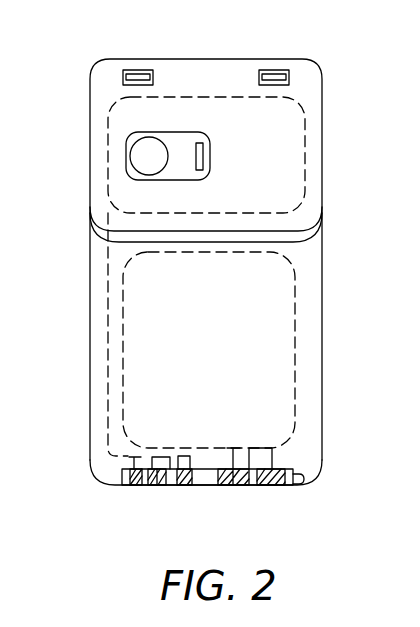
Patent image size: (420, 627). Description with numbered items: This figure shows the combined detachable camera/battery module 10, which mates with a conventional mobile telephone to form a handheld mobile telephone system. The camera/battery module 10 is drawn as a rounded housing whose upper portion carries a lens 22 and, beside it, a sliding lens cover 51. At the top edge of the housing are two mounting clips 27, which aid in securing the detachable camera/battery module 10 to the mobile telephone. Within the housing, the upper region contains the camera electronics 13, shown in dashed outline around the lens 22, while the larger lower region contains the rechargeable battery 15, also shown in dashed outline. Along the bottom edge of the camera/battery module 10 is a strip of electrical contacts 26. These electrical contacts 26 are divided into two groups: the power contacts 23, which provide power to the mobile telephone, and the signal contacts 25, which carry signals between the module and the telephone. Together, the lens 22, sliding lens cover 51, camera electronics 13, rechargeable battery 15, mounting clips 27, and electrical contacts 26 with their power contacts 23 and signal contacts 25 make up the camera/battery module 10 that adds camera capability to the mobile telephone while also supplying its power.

The camera/battery module 10 is at (90, 442).
The camera electronics 13 is at (292, 128).
The rechargeable battery 15 is at (273, 403).
The lens 22 is at (143, 155).
The power contacts 23 is at (285, 489).
The signal contacts 25 is at (195, 489).
The electrical contacts 26 is at (304, 479).
The mounting clips 27 is at (266, 70).
The sliding lens cover 51 is at (210, 148).